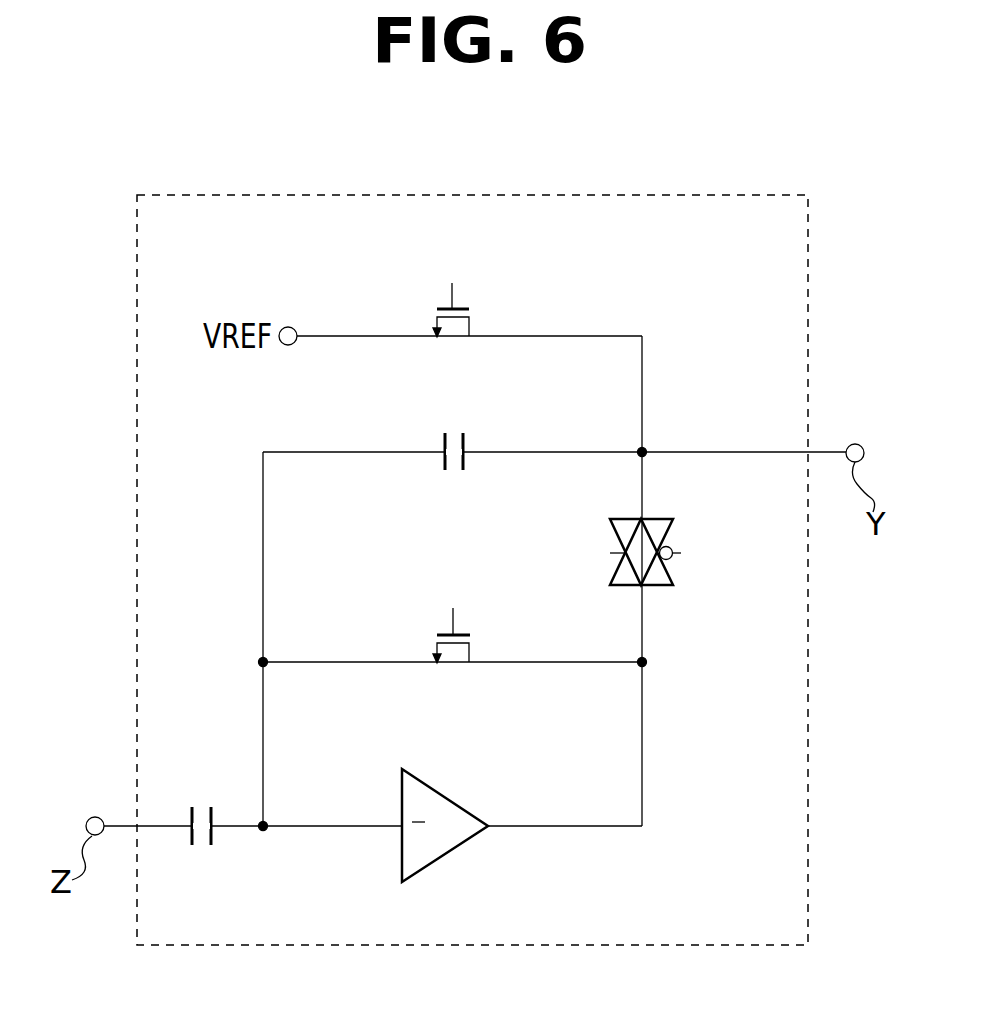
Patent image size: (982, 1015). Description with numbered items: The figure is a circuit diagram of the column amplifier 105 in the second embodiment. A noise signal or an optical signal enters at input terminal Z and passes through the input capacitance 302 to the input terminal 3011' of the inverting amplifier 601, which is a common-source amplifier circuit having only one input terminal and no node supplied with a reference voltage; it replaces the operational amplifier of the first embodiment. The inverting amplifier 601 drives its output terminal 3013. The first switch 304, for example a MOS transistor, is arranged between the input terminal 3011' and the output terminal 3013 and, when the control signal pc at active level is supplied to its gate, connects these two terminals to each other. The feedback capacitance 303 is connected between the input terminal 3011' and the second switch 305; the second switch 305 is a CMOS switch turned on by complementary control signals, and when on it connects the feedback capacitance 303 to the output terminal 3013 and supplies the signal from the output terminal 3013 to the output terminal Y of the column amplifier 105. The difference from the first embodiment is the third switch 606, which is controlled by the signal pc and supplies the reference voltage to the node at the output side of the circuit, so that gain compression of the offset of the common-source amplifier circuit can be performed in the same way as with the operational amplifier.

The column amplifier 105 is at (810, 234).
The third switch 606 is at (458, 348).
The feedback capacitance 303 is at (453, 432).
The second switch 305 is at (653, 587).
The first switch 304 is at (458, 674).
The input capacitance 302 is at (204, 804).
The inverting amplifier 601 is at (453, 798).
The input terminal 3011' is at (342, 860).
The output terminal 3013 is at (492, 830).